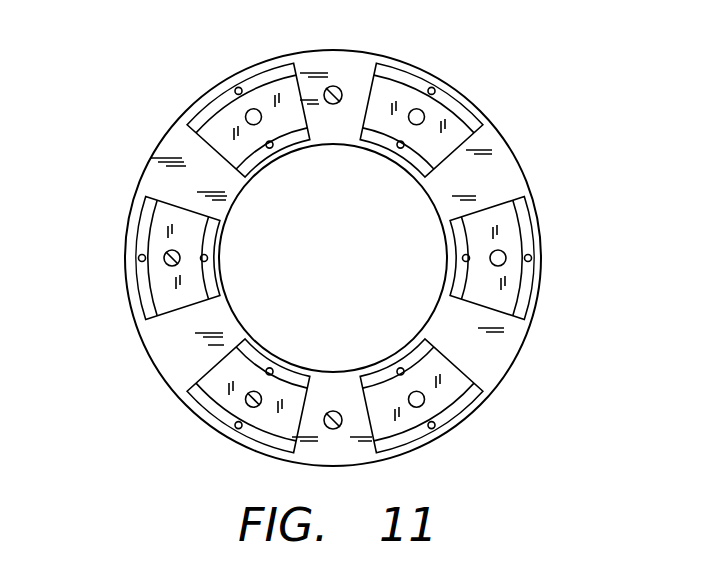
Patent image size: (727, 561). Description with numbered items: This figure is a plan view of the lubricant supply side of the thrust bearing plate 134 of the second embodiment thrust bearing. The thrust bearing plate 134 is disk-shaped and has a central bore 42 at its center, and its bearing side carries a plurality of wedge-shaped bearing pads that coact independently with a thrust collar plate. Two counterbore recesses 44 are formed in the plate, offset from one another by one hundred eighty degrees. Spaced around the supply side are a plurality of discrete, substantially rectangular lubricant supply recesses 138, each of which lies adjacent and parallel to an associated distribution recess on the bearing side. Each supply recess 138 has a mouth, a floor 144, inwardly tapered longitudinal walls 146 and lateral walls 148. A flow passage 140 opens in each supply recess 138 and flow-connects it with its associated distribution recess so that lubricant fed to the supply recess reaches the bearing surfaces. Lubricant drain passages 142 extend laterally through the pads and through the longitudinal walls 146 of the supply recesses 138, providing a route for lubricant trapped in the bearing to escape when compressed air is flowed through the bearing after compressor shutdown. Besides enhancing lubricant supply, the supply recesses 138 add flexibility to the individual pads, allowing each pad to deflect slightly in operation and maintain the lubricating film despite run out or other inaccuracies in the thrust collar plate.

The thrust bearing plate 134 is at (548, 113).
The central bore 42 is at (319, 270).
The lubricant supply recess 138 is at (394, 83).
The flow passage 140 is at (251, 109).
The lubricant drain passage 142 is at (237, 89).
The floor 144 is at (509, 223).
The longitudinal wall 146 is at (465, 238).
The lateral wall 148 is at (211, 140).
The counterbore recess 44 is at (331, 88).